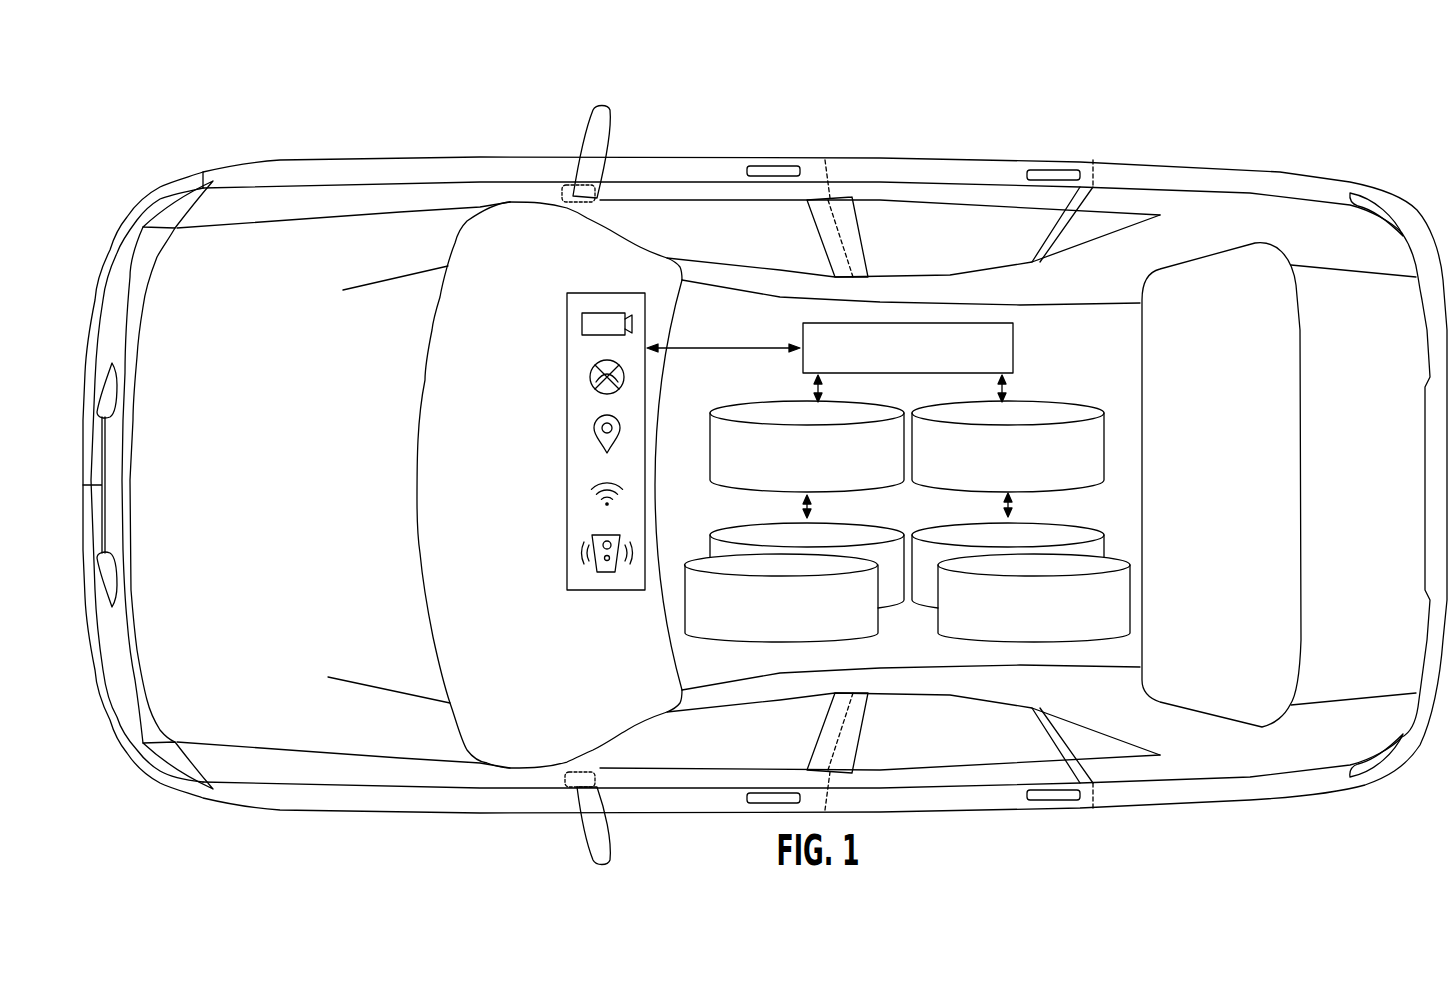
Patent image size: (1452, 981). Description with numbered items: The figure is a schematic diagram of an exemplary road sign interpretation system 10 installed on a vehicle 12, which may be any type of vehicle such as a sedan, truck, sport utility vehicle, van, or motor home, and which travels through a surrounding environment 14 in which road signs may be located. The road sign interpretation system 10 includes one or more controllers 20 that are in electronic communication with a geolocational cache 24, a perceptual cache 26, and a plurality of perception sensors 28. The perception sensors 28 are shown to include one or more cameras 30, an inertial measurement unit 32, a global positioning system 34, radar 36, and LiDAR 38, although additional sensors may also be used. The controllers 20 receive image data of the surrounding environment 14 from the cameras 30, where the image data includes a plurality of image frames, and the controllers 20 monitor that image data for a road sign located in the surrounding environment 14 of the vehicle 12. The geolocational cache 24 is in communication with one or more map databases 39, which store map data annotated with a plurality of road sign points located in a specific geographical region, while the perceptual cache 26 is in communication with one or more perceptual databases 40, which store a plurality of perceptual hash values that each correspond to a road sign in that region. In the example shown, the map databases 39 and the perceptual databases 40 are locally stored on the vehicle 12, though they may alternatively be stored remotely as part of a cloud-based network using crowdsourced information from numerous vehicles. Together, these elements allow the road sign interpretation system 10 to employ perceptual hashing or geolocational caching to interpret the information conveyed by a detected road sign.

The road sign interpretation system 10 is at (721, 237).
The vehicle 12 is at (1152, 159).
The surrounding environment 14 is at (1337, 118).
The controllers 20 is at (1017, 347).
The geolocational cache 24 is at (757, 402).
The perceptual cache 26 is at (1037, 402).
The perception sensors 28 is at (593, 292).
The cameras 30 is at (582, 322).
The inertial measurement unit 32 is at (590, 375).
The global positioning system 34 is at (592, 430).
The radar 36 is at (591, 486).
The LiDAR 38 is at (584, 550).
The map databases 39 is at (780, 640).
The perceptual databases 40 is at (1033, 640).